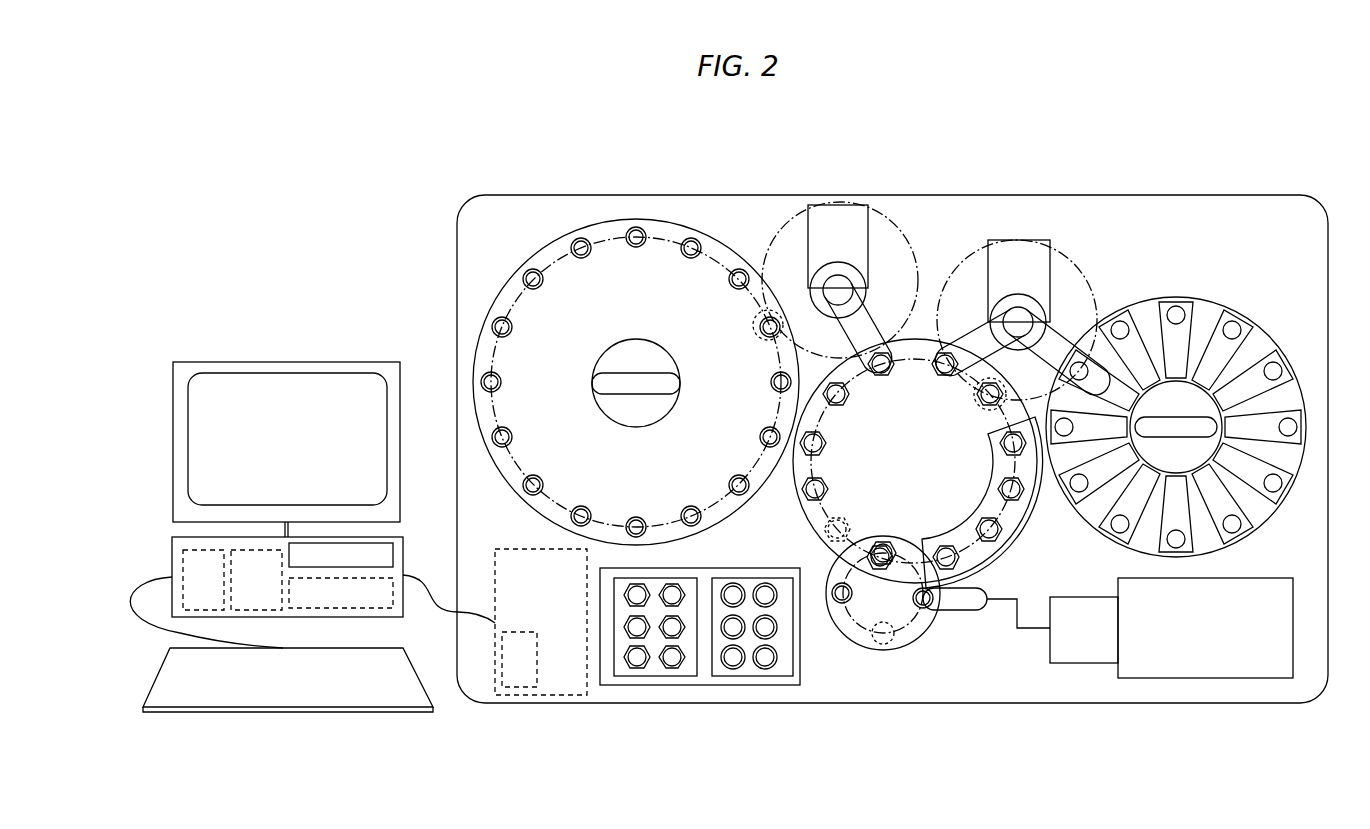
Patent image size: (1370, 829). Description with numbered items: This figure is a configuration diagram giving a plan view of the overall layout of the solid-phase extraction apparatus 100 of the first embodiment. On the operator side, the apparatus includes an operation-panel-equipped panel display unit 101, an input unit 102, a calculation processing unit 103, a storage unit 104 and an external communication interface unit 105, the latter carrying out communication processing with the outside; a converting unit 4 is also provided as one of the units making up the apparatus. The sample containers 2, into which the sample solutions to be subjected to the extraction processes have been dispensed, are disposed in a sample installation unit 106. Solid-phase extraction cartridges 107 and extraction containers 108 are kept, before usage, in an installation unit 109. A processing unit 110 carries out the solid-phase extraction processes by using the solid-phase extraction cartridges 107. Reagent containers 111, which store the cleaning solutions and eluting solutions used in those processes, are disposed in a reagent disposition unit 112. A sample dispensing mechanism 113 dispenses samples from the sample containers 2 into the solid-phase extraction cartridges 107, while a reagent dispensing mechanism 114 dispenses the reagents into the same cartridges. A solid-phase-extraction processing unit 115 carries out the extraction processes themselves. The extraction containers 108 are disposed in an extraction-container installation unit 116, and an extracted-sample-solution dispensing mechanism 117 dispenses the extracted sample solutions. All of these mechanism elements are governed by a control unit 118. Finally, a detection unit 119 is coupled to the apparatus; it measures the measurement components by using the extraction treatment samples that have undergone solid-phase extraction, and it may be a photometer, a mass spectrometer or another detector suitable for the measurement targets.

The sample container 2 is at (688, 228).
The converting unit 4 is at (512, 687).
The solid-phase extraction apparatus 100 is at (613, 197).
The operation-panel-equipped panel display unit 101 is at (327, 430).
The input unit 102 is at (233, 677).
The calculation processing unit 103 is at (257, 573).
The storage unit 104 is at (340, 593).
The external communication interface unit 105 is at (205, 573).
The sample installation unit 106 is at (555, 252).
The solid-phase extraction cartridge 107 is at (822, 523).
The extraction container 108 is at (840, 602).
The installation unit 109 is at (690, 685).
The processing unit 110 is at (938, 337).
The reagent container 111 is at (1168, 346).
The reagent disposition unit 112 is at (1207, 300).
The sample dispensing mechanism 113 is at (833, 235).
The reagent dispensing mechanism 114 is at (1018, 267).
The solid-phase-extraction processing unit 115 is at (1002, 552).
The extraction-container installation unit 116 is at (882, 652).
The extracted-sample-solution dispensing mechanism 117 is at (962, 602).
The control unit 118 is at (565, 695).
The detection unit 119 is at (1202, 648).